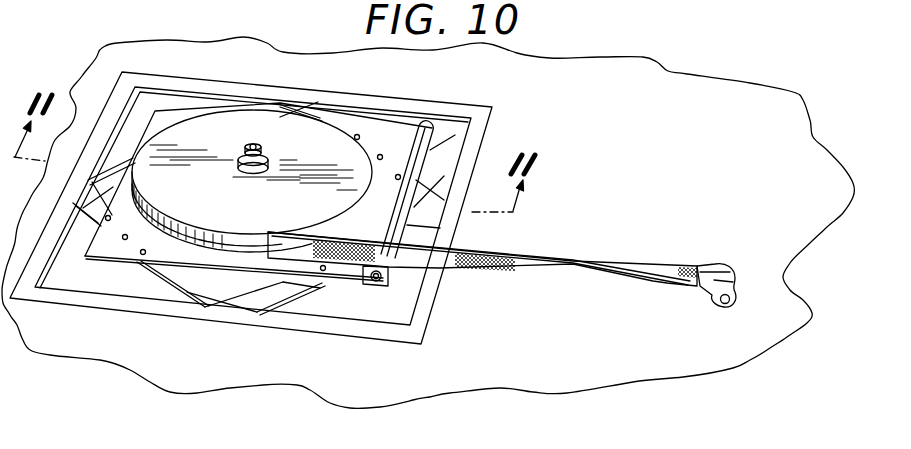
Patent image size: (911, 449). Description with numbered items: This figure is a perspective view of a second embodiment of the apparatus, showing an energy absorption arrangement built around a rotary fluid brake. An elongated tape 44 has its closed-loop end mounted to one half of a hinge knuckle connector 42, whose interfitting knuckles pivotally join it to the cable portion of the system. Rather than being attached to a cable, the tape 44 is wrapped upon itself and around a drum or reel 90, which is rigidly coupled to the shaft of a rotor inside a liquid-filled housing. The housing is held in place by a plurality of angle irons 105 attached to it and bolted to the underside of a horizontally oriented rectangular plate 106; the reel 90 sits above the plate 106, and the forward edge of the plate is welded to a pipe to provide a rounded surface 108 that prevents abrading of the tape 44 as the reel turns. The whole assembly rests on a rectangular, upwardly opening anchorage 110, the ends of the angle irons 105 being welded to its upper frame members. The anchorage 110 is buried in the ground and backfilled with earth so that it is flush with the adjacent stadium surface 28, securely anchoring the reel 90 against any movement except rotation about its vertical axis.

The stadium surface 28 is at (667, 83).
The hinge knuckle connector 42 is at (729, 268).
The elongated tape 44 is at (641, 267).
The tape reel 90 is at (334, 142).
The angle irons 105 is at (322, 112).
The rectangular plate 106 is at (353, 282).
The rounded surface 108 is at (422, 152).
The anchorage 110 is at (455, 108).